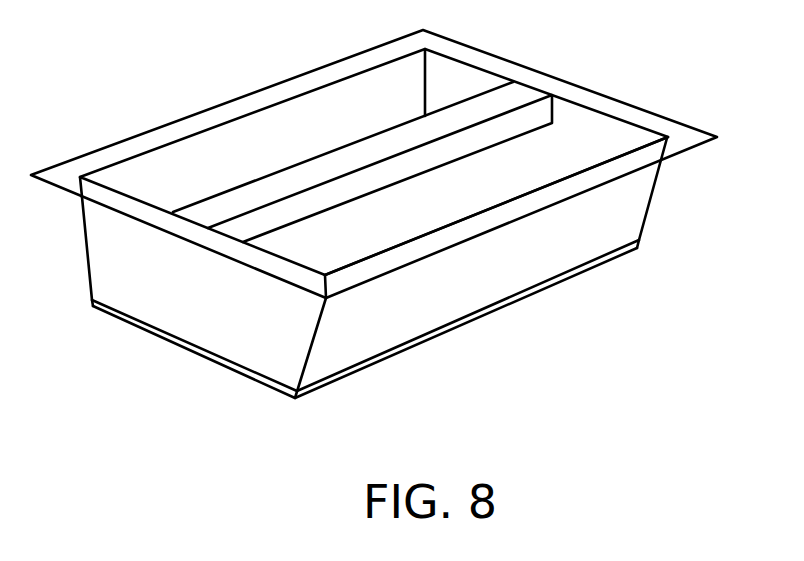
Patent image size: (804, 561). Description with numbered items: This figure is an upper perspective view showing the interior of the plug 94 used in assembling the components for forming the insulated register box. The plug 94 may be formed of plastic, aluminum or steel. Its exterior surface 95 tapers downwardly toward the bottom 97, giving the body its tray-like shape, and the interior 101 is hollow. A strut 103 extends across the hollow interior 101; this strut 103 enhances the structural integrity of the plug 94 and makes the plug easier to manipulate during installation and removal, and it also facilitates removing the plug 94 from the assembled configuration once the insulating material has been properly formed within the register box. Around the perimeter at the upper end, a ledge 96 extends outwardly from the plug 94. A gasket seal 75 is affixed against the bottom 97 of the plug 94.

The gasket seal 75 is at (391, 214).
The plug 94 is at (649, 205).
The exterior surface 95 is at (283, 342).
The ledge 96 is at (678, 135).
The bottom 97 is at (498, 305).
The interior 101 is at (577, 140).
The strut 103 is at (512, 98).